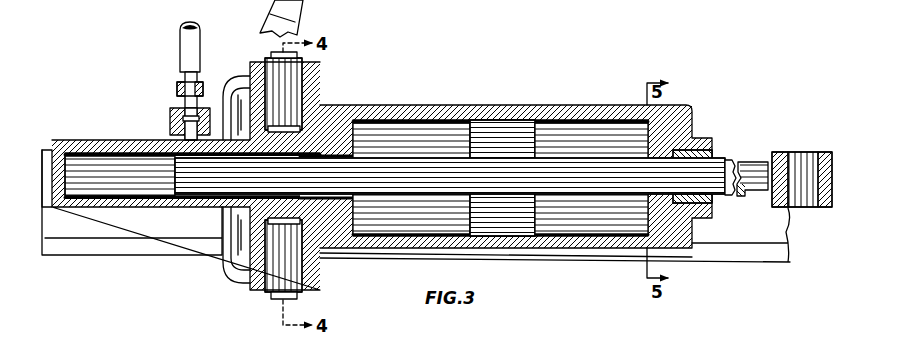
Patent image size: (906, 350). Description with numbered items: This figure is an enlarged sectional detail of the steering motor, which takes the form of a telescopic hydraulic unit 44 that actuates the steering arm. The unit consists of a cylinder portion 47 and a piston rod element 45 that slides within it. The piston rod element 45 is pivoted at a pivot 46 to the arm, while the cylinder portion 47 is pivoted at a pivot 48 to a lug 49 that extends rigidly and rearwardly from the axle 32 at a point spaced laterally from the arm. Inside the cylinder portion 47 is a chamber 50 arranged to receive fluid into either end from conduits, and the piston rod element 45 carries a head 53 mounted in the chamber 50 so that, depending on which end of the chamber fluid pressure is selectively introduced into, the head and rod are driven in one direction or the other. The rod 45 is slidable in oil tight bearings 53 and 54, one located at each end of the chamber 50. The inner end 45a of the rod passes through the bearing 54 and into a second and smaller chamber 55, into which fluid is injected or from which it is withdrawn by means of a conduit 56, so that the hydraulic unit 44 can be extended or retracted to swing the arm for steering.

The axle 32 is at (762, 259).
The telescopic hydraulic unit 44 is at (463, 104).
The piston rod element 45 is at (725, 161).
The inner end of the rod 45a is at (213, 175).
The pivot 46 is at (811, 152).
The cylinder portion 47 is at (408, 246).
The pivot 48 is at (320, 78).
The lug 49 is at (243, 272).
The chamber 50 is at (598, 136).
The head 53 is at (508, 135).
The oil tight bearing 54 is at (338, 124).
The second and smaller chamber 55 is at (100, 160).
The conduit 56 is at (192, 50).